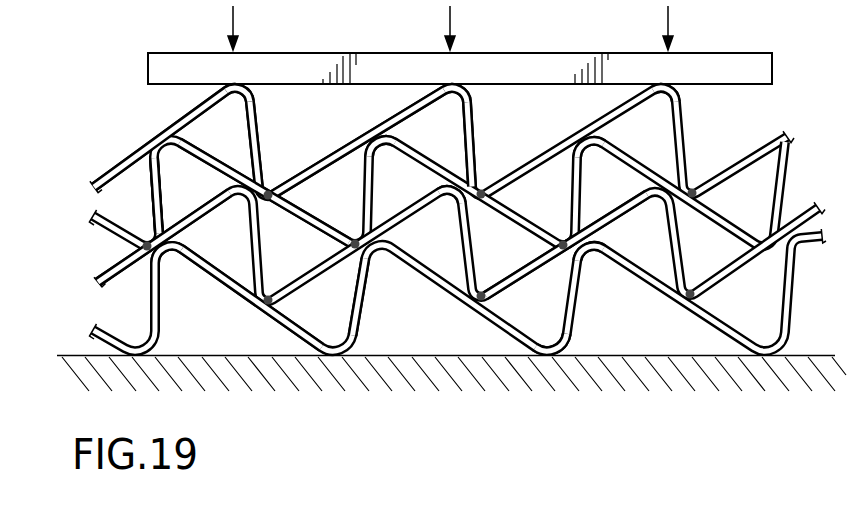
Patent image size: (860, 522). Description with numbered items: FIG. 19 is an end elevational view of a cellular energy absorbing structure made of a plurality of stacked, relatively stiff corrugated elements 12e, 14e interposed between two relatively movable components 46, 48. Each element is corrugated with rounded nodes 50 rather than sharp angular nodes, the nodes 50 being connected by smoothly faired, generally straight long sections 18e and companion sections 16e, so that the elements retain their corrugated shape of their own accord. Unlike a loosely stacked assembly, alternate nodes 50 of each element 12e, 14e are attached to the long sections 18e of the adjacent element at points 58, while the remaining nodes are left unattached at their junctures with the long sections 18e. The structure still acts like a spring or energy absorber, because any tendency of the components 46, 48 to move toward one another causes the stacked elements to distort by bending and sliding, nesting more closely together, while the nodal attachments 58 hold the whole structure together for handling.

The corrugated element 12e is at (267, 133).
The corrugated element 14e is at (170, 196).
The section of corrugated element 16e is at (474, 132).
The long section 18e is at (144, 145).
The relatively movable component 46 is at (529, 52).
The relatively movable component 48 is at (432, 368).
The rounded node 50 is at (246, 84).
The point of attachment 58 is at (270, 192).